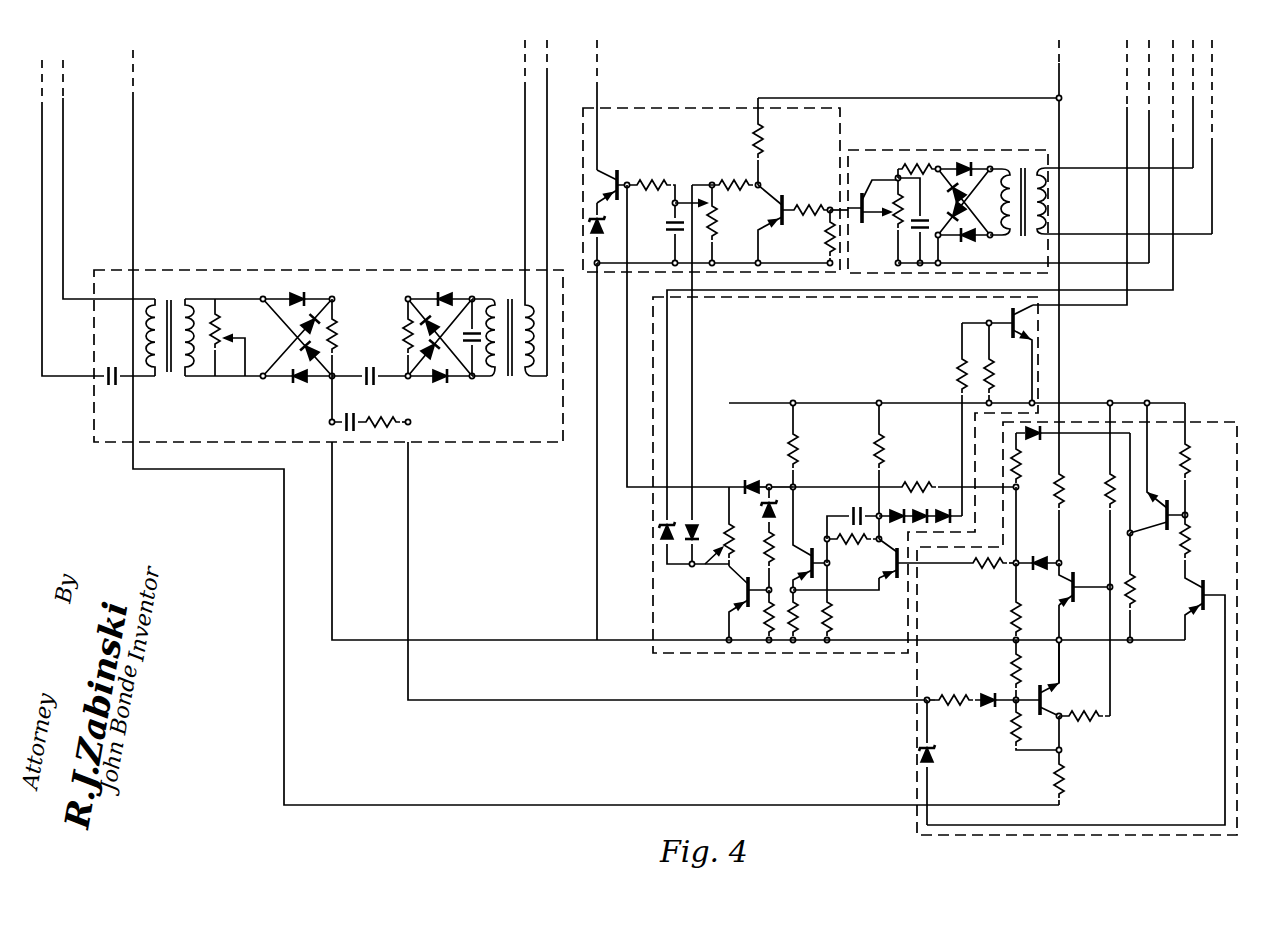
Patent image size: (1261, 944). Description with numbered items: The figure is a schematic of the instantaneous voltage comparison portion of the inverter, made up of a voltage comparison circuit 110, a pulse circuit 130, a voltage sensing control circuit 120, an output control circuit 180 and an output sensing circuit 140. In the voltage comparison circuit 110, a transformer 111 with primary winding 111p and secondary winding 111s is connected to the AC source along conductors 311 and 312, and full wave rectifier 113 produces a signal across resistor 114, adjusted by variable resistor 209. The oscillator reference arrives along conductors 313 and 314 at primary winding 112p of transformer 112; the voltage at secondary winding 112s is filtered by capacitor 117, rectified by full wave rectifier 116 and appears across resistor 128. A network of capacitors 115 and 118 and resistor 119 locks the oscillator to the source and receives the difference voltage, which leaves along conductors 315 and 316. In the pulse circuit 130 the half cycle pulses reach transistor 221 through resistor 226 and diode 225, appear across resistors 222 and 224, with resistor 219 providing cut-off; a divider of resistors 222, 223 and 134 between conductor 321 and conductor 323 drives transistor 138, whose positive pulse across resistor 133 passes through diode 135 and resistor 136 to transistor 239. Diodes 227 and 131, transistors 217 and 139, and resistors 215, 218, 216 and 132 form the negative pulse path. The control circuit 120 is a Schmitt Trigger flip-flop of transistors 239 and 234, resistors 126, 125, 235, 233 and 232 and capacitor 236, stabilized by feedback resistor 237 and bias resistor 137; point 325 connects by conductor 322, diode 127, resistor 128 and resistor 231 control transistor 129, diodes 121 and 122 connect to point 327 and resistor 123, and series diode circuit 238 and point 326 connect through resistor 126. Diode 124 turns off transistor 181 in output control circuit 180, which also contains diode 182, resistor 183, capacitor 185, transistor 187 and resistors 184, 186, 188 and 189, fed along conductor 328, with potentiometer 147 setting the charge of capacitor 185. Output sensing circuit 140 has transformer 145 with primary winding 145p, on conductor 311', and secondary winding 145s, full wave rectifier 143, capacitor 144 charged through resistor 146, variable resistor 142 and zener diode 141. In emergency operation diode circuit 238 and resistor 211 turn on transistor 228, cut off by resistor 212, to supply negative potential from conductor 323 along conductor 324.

The voltage comparison circuit 110 is at (233, 270).
The transformer 111 is at (186, 347).
The primary winding 111p is at (157, 365).
The secondary winding 111s is at (185, 365).
The transformer 112 is at (514, 351).
The primary winding 112p is at (525, 364).
The secondary winding 112s is at (495, 362).
The full wave rectifier 113 is at (300, 343).
The resistor 114 is at (337, 333).
The capacitor 115 is at (368, 366).
The full wave rectifier 116 is at (428, 306).
The capacitor 117 is at (475, 348).
The capacitor 118 is at (350, 413).
The resistor 119 is at (382, 413).
The voltage sensing control circuit 120 is at (655, 312).
The diode 121 is at (660, 528).
The diode 122 is at (694, 522).
The resistor 123 is at (710, 578).
The diode 124 is at (752, 480).
The resistor 125 is at (797, 447).
The resistor 126 is at (883, 447).
The diode 127 is at (765, 516).
The resistor 128 is at (404, 341).
The transistor 129 is at (738, 600).
The pulse circuit 130 is at (1208, 422).
The diode 131 is at (1035, 443).
The resistor 132 is at (1020, 480).
The resistor 133 is at (1065, 493).
The resistor 134 is at (1108, 500).
The diode 135 is at (1040, 555).
The resistor 136 is at (990, 568).
The bias resistor 137 is at (1020, 608).
The transistor 138 is at (1076, 575).
The transistor 139 is at (1170, 510).
The output sensing circuit 140 is at (912, 150).
The zener diode 141 is at (866, 196).
The variable resistor 142 is at (893, 216).
The full wave rectifier 143 is at (970, 208).
The capacitor 144 is at (930, 213).
The transformer 145 is at (1101, 191).
The primary winding 145p is at (1042, 225).
The secondary winding 145s is at (1010, 230).
The resistor 146 is at (922, 166).
The potentiometer 147 is at (714, 222).
The output control circuit 180 is at (700, 108).
The transistor 181 is at (622, 176).
The diode 182 is at (599, 237).
The resistor 183 is at (658, 180).
The resistor 184 is at (738, 180).
The capacitor 185 is at (668, 224).
The resistor 186 is at (762, 140).
The transistor 187 is at (783, 195).
The resistor 188 is at (812, 203).
The resistor 189 is at (826, 240).
The variable resistor 209 is at (230, 305).
The resistor 211 is at (958, 372).
The resistor 212 is at (992, 372).
The resistor 215 is at (1130, 540).
The resistor 216 is at (1134, 592).
The transistor 217 is at (1195, 578).
The resistor 218 is at (1190, 455).
The resistor 219 is at (1012, 672).
The transistor 221 is at (1040, 685).
The resistor 222 is at (1064, 776).
The resistor 223 is at (1100, 720).
The bias resistor 224 is at (1015, 750).
The diode 225 is at (986, 694).
The resistor 226 is at (958, 704).
The diode 227 is at (935, 758).
The transistor 228 is at (1010, 316).
The resistor 231 is at (766, 638).
The resistor 232 is at (793, 640).
The resistor 233 is at (832, 620).
The transistor 234 is at (812, 548).
The resistor 235 is at (852, 549).
The capacitor 236 is at (855, 511).
The feedback resistor 237 is at (912, 482).
The series diode circuit 238 is at (935, 505).
The transistor 239 is at (890, 575).
The conductor 311 is at (78, 218).
The conductor 311' is at (1224, 104).
The conductor 312 is at (63, 124).
The conductor 313 is at (525, 124).
The conductor 314 is at (547, 94).
The conductor 315 is at (332, 503).
The conductor 316 is at (408, 496).
The conductor 321 is at (133, 95).
The conductor 322 is at (1149, 118).
The conductor 323 is at (1057, 95).
The conductor 324 is at (1127, 108).
The point 325 is at (800, 486).
The point 326 is at (879, 514).
The point 327 is at (764, 548).
The conductor 328 is at (597, 95).